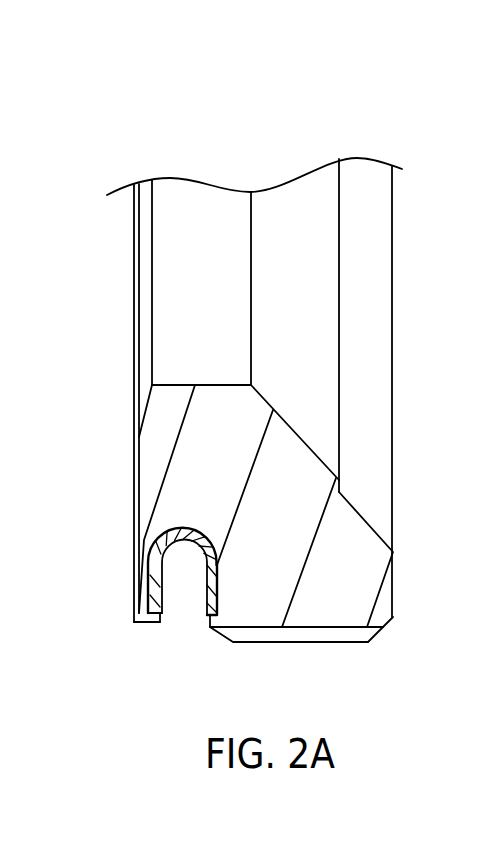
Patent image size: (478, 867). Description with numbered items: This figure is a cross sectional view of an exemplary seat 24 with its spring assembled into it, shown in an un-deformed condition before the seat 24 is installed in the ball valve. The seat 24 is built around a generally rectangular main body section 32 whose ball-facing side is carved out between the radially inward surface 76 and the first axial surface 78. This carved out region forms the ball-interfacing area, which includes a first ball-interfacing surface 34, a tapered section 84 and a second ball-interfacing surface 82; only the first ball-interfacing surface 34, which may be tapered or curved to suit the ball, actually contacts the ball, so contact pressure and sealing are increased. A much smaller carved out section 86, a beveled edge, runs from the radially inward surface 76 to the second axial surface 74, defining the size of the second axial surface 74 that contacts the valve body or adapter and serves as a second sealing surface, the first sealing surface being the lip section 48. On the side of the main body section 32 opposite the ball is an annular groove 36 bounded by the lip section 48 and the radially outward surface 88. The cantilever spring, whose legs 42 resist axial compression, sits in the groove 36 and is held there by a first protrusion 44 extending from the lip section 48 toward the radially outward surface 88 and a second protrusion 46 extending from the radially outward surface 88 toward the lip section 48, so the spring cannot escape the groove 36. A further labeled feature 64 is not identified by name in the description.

The seat 24 is at (365, 188).
The radially inward surface 76 is at (222, 382).
The carved out section 86 is at (150, 398).
The second axial surface 74 is at (137, 465).
The first ball-interfacing surface 34 is at (293, 428).
The tapered section 84 is at (340, 485).
The second ball-interfacing surface 82 is at (370, 522).
The first axial surface 78 is at (397, 598).
The radially outward surface 88 is at (302, 643).
The main body section 32 is at (270, 517).
The legs 42 is at (220, 598).
The second protrusion 46 is at (207, 622).
The first protrusion 44 is at (160, 617).
The lip section 48 is at (135, 614).
The retaining clip 64 is at (146, 553).
The groove 36 is at (182, 578).